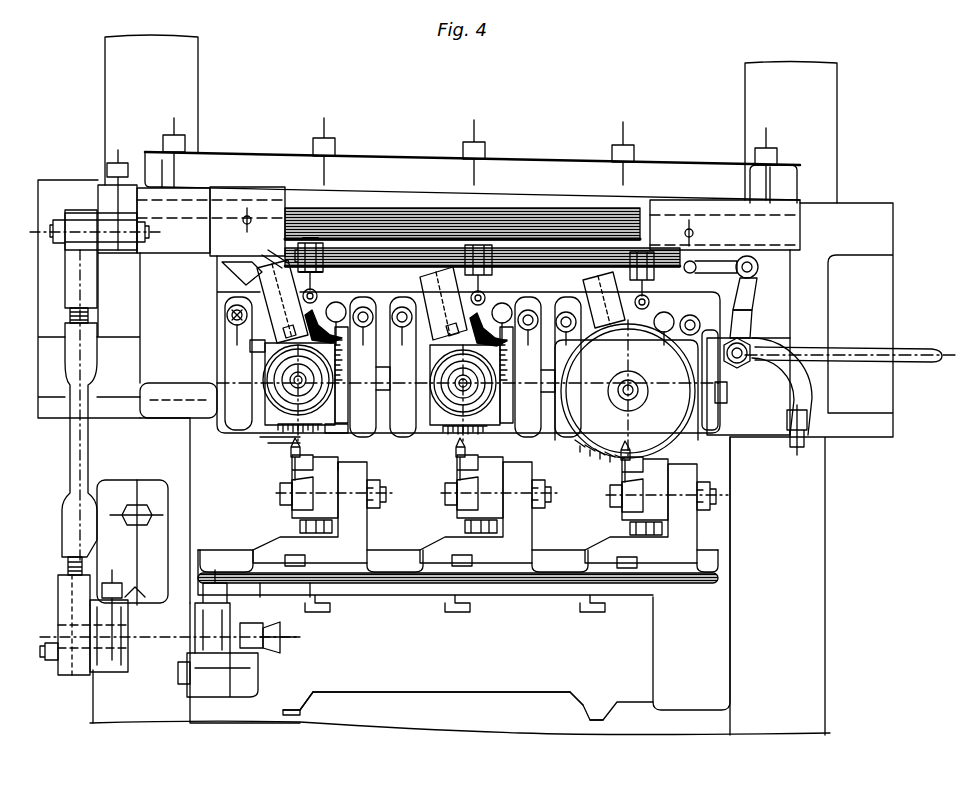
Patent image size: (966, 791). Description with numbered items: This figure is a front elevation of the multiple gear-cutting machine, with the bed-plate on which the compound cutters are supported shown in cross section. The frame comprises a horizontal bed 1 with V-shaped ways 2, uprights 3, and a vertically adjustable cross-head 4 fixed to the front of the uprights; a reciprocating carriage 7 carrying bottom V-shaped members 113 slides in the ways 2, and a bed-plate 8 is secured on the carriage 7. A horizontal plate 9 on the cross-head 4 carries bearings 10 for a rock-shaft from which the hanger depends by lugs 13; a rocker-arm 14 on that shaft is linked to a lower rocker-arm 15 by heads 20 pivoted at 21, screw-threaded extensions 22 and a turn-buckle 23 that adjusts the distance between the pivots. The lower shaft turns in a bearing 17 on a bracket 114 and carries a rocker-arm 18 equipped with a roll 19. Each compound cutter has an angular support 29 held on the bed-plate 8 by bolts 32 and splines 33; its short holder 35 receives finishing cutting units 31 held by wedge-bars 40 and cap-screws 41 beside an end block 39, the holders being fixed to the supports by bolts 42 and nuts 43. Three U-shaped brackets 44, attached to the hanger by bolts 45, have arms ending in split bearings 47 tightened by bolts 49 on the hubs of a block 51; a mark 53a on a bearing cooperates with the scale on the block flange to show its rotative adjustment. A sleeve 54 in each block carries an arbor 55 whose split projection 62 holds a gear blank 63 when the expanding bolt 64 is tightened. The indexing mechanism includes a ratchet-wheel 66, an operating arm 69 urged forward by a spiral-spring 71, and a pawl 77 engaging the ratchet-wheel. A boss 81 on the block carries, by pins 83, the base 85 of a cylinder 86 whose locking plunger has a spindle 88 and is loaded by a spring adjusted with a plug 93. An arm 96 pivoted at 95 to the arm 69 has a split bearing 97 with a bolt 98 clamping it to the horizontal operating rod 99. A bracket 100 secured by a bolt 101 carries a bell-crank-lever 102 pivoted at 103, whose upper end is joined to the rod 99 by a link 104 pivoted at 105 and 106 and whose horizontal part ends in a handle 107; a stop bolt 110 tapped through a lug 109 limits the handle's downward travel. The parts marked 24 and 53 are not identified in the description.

The bed 1 is at (441, 711).
The V-shaped grooves or ways 2 is at (295, 715).
The uprights 3 is at (471, 119).
The cross-head 4 is at (849, 291).
The carriage 7 is at (328, 650).
The bed-plate 8 is at (516, 585).
The horizontal plate 9 is at (756, 300).
The bearings 10 is at (459, 220).
The lugs 13 is at (238, 198).
The rocker-arm 14 is at (118, 240).
The rocker-arm 15 is at (110, 660).
The bearing 17 is at (128, 630).
The rocker-arm 18 is at (190, 665).
The roll 19 is at (240, 697).
The heads 20 is at (65, 272).
The pivots 21 is at (40, 231).
The screw-threaded extensions 22 is at (70, 315).
The turn-buckle 23 is at (78, 452).
The bevel pinion 24 is at (288, 646).
The support 29 is at (459, 508).
The cutting units 31 is at (291, 451).
The bolts 32 is at (300, 527).
The splines 33 is at (292, 568).
The short holder 35 is at (374, 462).
The end block 39 is at (292, 465).
The wedge-bars 40 is at (300, 502).
The cap-screws 41 is at (280, 493).
The bolts 42 is at (381, 502).
The nuts 43 is at (370, 508).
The U-shaped brackets 44 is at (368, 306).
The bolts 45 is at (337, 300).
The bearings 47 is at (237, 332).
The bolt 49 is at (227, 315).
The block 51 is at (278, 432).
The scale bar 53 is at (438, 375).
The mark 53a is at (450, 367).
The sleeve 54 is at (273, 380).
The arbor 55 is at (283, 386).
The split projection 62 is at (277, 355).
The gear blank 63 is at (626, 391).
The expanding bolt 64 is at (278, 404).
The ratchet-wheel 66 is at (270, 440).
The operating arm 69 is at (320, 292).
The spiral-spring 71 is at (280, 444).
The pawl 77 is at (365, 282).
The boss 81 is at (217, 383).
The pins 83 is at (250, 345).
The base 85 is at (445, 312).
The cylinder 86 is at (262, 280).
The spindle 88 is at (252, 222).
The screw cap or plug 93 is at (262, 258).
The pivot 95 is at (222, 268).
The arm 96 is at (320, 250).
The split bearing 97 is at (318, 248).
The bolt 98 is at (313, 242).
The operating rod 99 is at (413, 258).
The bracket 100 is at (737, 365).
The bolt 101 is at (727, 398).
The bell-crank-lever 102 is at (750, 324).
The pivot 103 is at (790, 345).
The link 104 is at (712, 261).
The pivot 105 is at (758, 262).
The pivot 106 is at (693, 230).
The handle 107 is at (905, 365).
The lug 109 is at (812, 422).
The bolt 110 is at (793, 443).
The V-shaped members 113 is at (320, 705).
The bracket 114 is at (132, 542).